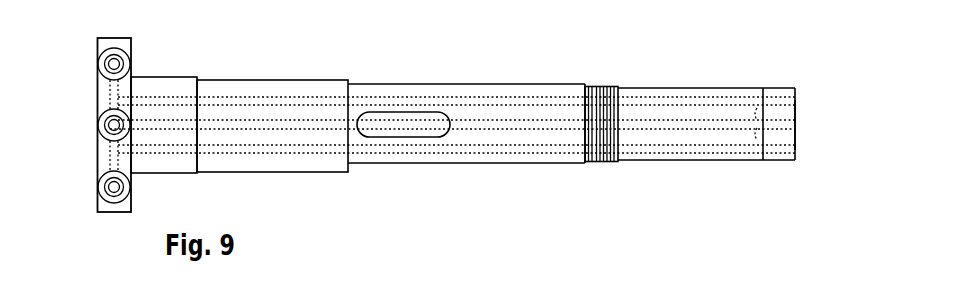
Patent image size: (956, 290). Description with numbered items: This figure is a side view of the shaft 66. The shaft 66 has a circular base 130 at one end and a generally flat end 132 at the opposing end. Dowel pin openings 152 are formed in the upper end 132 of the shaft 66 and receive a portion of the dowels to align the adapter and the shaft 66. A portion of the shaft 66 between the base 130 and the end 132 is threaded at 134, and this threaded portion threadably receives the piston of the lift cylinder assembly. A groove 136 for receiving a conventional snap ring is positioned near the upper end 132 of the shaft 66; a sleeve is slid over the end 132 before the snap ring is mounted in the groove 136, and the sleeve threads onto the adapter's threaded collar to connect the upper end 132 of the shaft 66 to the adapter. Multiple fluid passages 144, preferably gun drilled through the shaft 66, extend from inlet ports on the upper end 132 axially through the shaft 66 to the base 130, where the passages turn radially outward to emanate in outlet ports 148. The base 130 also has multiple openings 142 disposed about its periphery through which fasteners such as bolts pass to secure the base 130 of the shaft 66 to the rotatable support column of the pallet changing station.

The circular base 130 is at (121, 37).
The outlet ports 148 is at (105, 62).
The shaft 66 is at (540, 168).
The fluid passages 144 is at (277, 100).
The threaded portion 134 is at (603, 87).
The flat end 132 is at (796, 100).
The groove 136 is at (765, 88).
The dowel pin openings 152 is at (799, 133).
The openings 142 is at (444, 4).